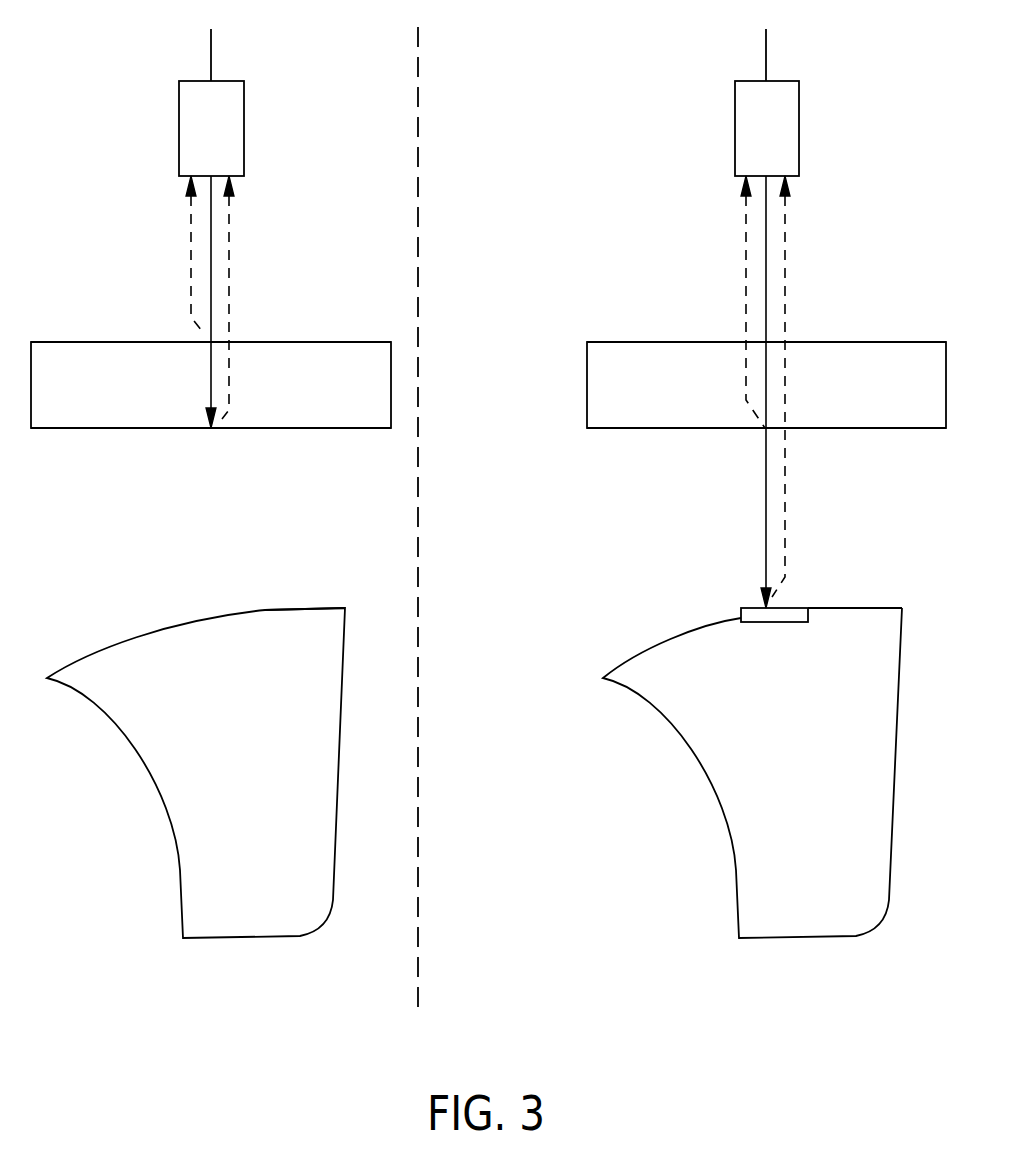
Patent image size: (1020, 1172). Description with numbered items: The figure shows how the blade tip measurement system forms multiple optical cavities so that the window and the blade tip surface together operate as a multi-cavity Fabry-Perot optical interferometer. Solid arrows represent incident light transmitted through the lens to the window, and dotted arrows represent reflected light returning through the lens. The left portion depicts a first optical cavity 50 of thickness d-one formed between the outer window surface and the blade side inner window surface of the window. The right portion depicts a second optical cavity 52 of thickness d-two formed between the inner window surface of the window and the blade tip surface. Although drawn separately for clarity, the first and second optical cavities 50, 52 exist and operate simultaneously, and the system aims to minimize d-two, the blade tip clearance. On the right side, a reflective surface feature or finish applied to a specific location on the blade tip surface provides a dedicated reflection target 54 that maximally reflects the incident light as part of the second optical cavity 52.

The first optical cavity 50 is at (92, 156).
The second optical cavity 52 is at (647, 156).
The reflection target 54 is at (775, 622).